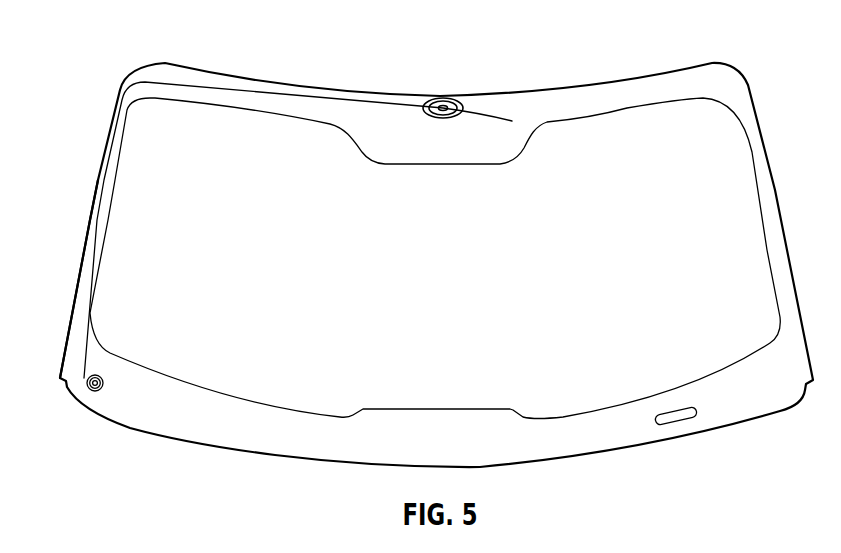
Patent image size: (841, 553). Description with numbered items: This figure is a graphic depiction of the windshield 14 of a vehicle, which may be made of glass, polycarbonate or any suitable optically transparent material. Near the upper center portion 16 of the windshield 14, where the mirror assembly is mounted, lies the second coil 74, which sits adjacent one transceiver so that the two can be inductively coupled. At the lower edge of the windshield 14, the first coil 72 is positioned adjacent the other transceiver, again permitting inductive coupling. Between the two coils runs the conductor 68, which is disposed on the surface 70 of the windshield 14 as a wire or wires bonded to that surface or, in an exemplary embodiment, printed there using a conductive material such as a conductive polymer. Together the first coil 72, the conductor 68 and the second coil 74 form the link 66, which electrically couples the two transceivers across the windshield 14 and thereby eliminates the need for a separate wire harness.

The windshield 14 is at (718, 80).
The upper center portion 16 is at (487, 97).
The link 66 is at (89, 226).
The conductor 68 is at (90, 268).
The surface 70 is at (452, 278).
The first coil 72 is at (103, 382).
The second coil 74 is at (443, 98).